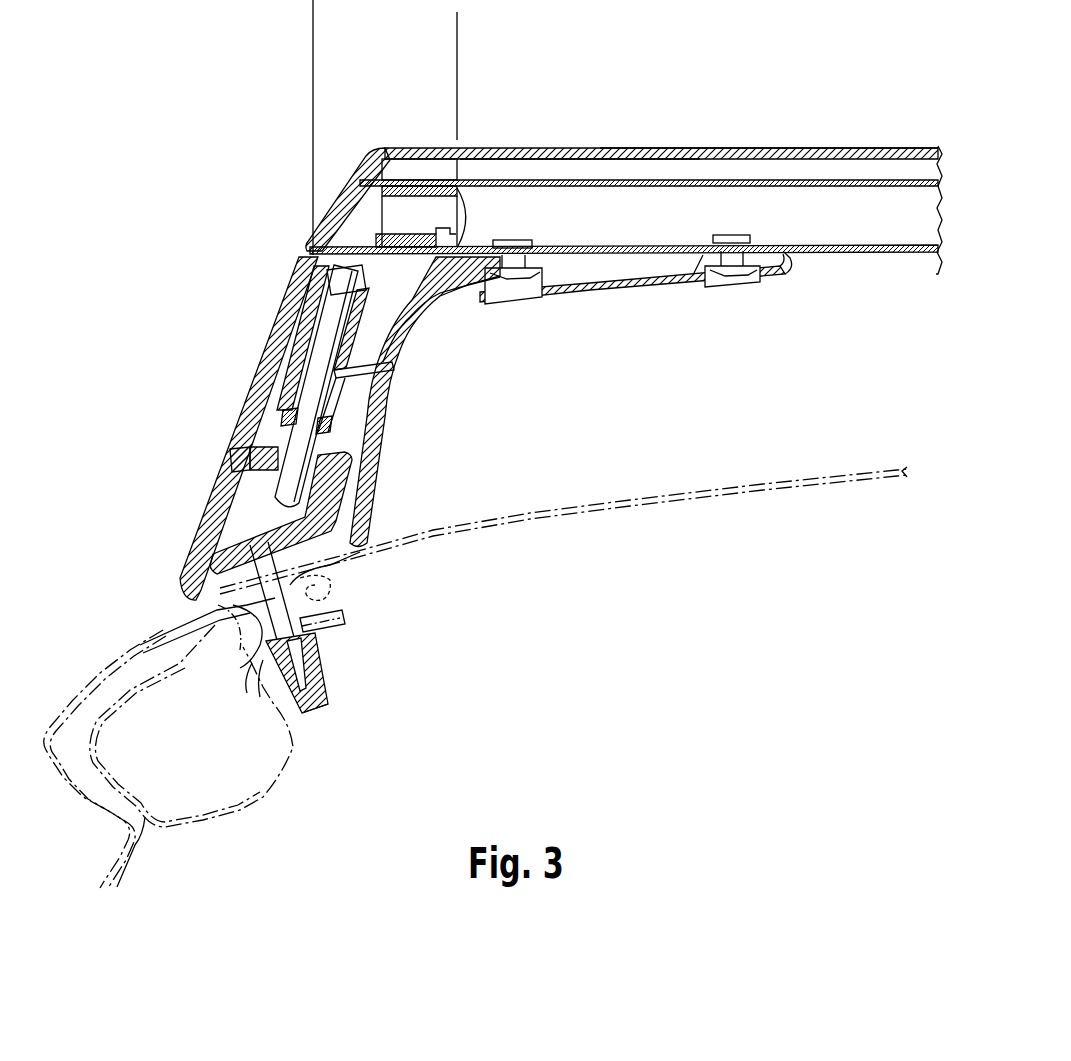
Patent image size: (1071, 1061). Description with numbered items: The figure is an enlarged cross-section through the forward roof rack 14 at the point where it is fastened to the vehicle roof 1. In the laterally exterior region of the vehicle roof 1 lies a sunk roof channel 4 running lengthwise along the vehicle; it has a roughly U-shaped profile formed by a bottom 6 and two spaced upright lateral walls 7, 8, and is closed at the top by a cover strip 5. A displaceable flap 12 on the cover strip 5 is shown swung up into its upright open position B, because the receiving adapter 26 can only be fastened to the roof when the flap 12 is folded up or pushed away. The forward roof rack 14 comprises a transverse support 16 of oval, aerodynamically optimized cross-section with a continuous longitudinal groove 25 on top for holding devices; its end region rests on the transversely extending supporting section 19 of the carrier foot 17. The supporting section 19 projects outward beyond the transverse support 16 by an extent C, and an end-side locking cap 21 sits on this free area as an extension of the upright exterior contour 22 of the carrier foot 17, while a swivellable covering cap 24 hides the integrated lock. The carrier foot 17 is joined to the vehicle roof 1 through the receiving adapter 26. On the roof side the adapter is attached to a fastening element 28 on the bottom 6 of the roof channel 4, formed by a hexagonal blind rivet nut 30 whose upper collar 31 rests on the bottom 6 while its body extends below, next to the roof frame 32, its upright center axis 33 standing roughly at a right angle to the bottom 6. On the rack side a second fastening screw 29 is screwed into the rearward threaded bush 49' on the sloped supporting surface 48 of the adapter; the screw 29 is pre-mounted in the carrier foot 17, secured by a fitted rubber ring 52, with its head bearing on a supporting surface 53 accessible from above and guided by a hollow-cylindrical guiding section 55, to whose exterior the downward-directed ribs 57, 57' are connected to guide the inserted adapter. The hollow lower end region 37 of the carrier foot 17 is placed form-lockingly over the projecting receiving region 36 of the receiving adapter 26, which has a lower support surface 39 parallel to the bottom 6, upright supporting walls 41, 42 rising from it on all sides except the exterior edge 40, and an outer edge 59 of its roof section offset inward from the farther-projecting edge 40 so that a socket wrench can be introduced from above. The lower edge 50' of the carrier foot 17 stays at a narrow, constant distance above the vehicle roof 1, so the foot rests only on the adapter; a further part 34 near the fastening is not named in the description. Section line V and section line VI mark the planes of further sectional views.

The vehicle roof 1 is at (831, 468).
The roof channel 4 is at (215, 650).
The cover strip 5 is at (245, 548).
The bottom 6 is at (283, 690).
The lateral wall 7 is at (225, 637).
The lateral wall 8 is at (312, 590).
The flap 12 is at (235, 655).
The forward roof rack 14 is at (640, 133).
The transverse support 16 is at (790, 144).
The carrier foot 17 is at (399, 387).
The supporting section 19 is at (788, 271).
The locking cap 21 is at (426, 146).
The exterior contour 22 is at (289, 284).
The covering cap 24 is at (341, 192).
The groove 25 is at (556, 168).
The receiving adapter 26 is at (407, 540).
The fastening element 28 is at (322, 667).
The second fastening screw 29 is at (313, 347).
The hexagonal blind rivet nut 30 is at (327, 699).
The upper collar 31 is at (305, 621).
The roof frame 32 is at (300, 770).
The center axis 33 is at (222, 455).
The sheet 34 is at (237, 606).
The projecting receiving region 36 is at (352, 483).
The hollow lower end region 37 is at (237, 490).
The support surface 39 is at (233, 537).
The exterior edge 40 is at (203, 553).
The supporting wall 41 is at (338, 525).
The supporting wall 42 is at (233, 513).
The supporting surface 48 is at (260, 440).
The threaded bush 49' is at (238, 352).
The lower edge 50' is at (420, 589).
The rubber ring 52 is at (330, 430).
The supporting surface 53 is at (366, 288).
The guiding section 55 is at (350, 325).
The rib 57 is at (278, 338).
The rib 57' is at (389, 461).
The outer edge 59 is at (243, 453).
The open position B is at (227, 580).
The extent C is at (457, 33).
The section line V is at (352, 810).
The section line VI is at (300, 340).